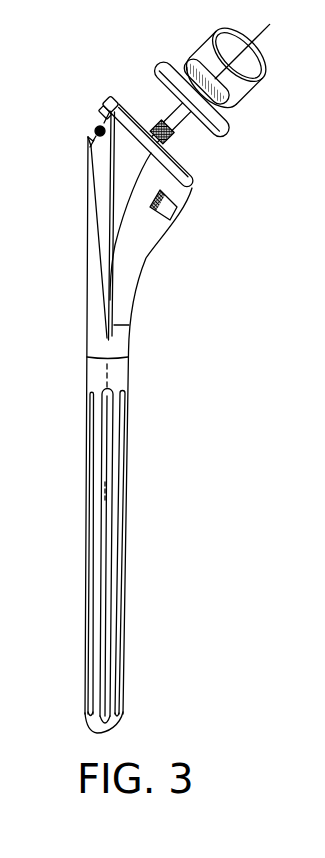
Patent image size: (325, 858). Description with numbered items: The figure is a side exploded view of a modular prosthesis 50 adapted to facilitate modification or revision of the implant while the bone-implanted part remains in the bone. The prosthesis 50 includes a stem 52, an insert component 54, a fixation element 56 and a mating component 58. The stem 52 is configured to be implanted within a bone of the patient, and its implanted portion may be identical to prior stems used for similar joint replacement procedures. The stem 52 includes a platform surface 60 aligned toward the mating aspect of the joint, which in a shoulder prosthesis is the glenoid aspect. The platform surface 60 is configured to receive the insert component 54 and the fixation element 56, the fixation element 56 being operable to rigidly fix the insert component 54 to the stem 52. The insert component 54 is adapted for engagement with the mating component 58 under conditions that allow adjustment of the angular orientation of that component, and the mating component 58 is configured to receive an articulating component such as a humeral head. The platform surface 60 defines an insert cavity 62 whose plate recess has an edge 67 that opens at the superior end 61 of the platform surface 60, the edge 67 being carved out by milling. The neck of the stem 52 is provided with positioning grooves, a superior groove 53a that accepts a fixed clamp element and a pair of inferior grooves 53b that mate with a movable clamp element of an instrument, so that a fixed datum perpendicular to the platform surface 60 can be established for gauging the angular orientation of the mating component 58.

The prosthesis 50 is at (185, 327).
The stem 52 is at (122, 375).
The superior groove 53a is at (92, 145).
The inferior grooves 53b is at (173, 222).
The insert component 54 is at (206, 136).
The fixation element 56 is at (150, 117).
The mating component 58 is at (247, 89).
The platform surface 60 is at (196, 186).
The superior end 61 is at (99, 114).
The insert cavity 62 is at (112, 101).
The edge 67 is at (92, 136).